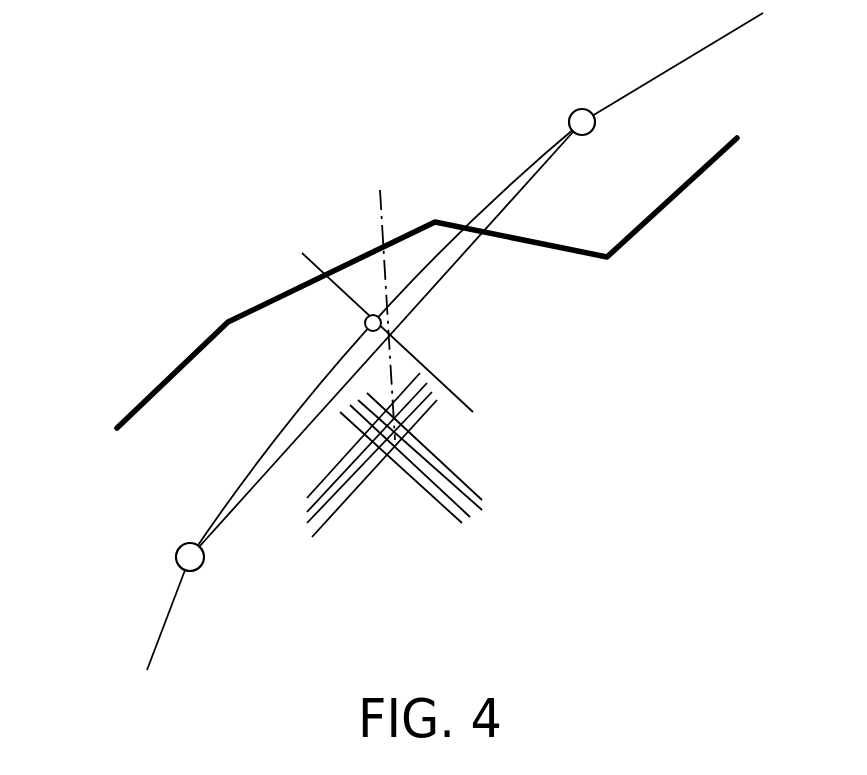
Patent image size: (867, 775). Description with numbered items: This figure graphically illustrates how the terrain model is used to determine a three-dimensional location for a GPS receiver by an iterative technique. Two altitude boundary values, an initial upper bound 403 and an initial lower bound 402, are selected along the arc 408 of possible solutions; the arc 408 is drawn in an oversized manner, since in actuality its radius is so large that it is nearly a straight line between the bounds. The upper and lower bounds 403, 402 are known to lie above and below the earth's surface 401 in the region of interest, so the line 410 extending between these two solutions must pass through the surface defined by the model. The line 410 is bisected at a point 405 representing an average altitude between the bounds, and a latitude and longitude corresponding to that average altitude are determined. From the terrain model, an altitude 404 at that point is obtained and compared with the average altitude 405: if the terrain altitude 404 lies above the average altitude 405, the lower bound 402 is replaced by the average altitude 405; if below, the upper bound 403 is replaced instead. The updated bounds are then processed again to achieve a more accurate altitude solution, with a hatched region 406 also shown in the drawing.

The earth's surface 401 is at (153, 390).
The initial lower bound 402 is at (177, 545).
The initial upper bound 403 is at (580, 108).
The altitude 404 is at (360, 230).
The point 405 is at (363, 325).
The hatched tolerance region 406 is at (400, 438).
The arc 408 is at (167, 617).
The line 410 is at (520, 175).